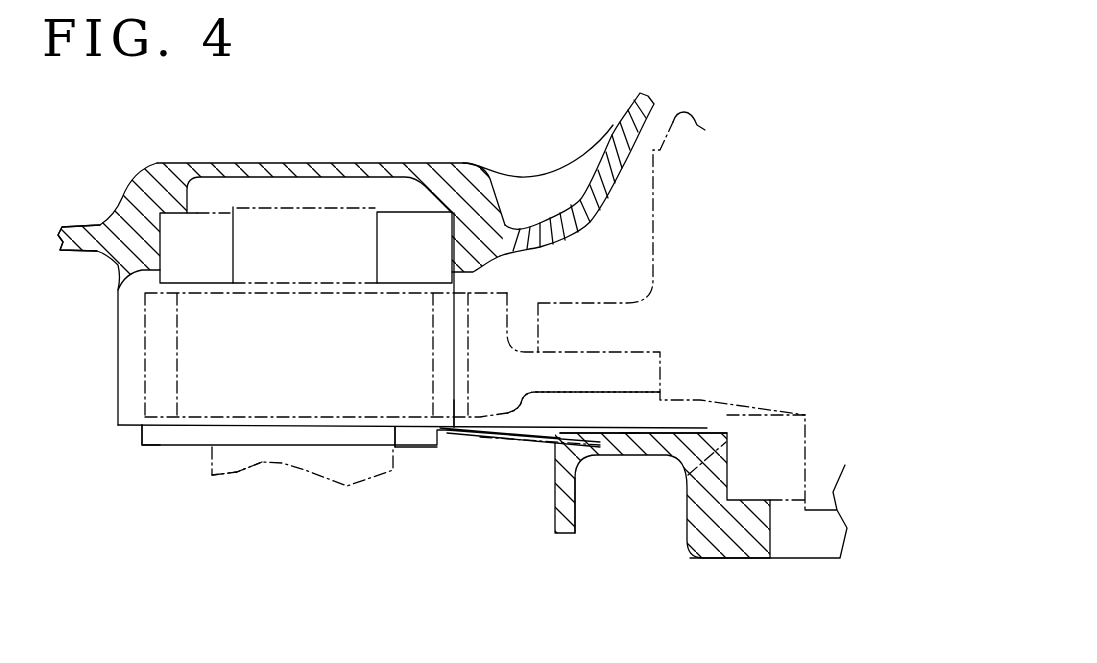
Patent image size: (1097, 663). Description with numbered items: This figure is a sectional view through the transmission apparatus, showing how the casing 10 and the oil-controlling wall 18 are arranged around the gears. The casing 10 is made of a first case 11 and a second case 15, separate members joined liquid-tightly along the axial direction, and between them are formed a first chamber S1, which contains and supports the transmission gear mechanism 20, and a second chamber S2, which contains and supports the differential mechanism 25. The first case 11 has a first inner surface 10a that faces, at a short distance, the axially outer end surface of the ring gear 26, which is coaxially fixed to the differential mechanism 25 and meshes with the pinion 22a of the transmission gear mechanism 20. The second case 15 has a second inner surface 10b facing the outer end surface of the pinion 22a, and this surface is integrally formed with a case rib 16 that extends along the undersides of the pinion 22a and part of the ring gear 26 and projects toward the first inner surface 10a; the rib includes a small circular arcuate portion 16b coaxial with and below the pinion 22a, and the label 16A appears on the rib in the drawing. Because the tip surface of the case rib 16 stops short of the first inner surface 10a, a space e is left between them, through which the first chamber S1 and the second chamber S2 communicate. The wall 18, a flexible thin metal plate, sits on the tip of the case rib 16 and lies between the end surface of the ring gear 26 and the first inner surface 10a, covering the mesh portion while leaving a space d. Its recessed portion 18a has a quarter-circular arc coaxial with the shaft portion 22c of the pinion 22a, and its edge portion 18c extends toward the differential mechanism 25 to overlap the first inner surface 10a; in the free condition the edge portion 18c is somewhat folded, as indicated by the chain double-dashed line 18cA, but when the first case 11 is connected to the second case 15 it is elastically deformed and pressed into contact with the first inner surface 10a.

The casing 10 is at (194, 153).
The first inner surface 10a is at (692, 430).
The second inner surface 10b is at (118, 293).
The first case 11 is at (557, 507).
The second case 15 is at (467, 180).
The case rib 16 is at (293, 427).
The plate portion 16A is at (653, 418).
The small circular arcuate portion 16b is at (140, 428).
The wall 18 is at (340, 426).
The recessed portion 18a is at (417, 447).
The edge portion 18c is at (587, 427).
The chain double-dashed line 18cA is at (593, 445).
The transmission gear mechanism 20 is at (238, 483).
The pinion 22a is at (423, 283).
The shaft portion 22c is at (210, 460).
The differential mechanism 25 is at (650, 203).
The ring gear 26 is at (492, 291).
The space d is at (480, 422).
The space e is at (627, 430).
The first chamber S1 is at (498, 507).
The second chamber S2 is at (724, 251).